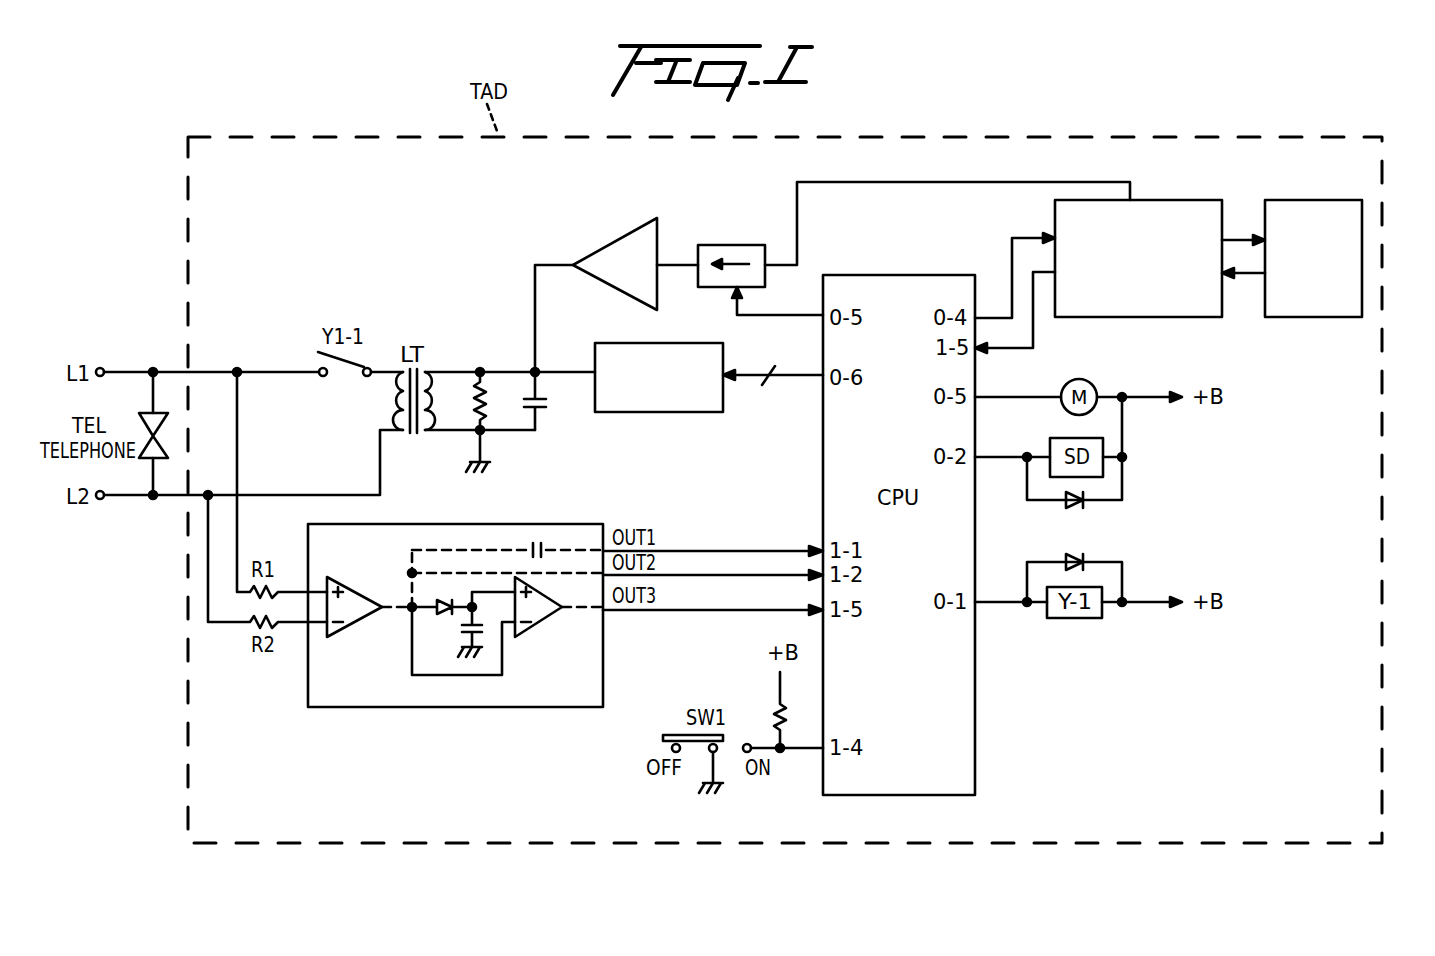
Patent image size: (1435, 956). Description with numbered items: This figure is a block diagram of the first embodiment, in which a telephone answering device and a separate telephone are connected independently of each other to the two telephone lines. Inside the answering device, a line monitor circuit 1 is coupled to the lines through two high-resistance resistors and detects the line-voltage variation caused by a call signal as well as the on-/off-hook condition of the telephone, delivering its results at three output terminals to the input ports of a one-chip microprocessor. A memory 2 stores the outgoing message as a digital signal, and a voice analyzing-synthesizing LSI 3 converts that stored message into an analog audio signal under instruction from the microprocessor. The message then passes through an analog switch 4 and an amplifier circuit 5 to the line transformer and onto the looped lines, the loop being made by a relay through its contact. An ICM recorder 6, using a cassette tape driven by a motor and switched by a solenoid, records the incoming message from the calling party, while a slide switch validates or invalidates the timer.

The line monitor circuit 1 is at (448, 708).
The memory 2 is at (1316, 210).
The voice analyzing-synthesizing LSI 3 is at (1190, 208).
The analog switch 4 is at (738, 250).
The amplifier circuit 5 is at (641, 240).
The ICM recorder 6 is at (675, 404).